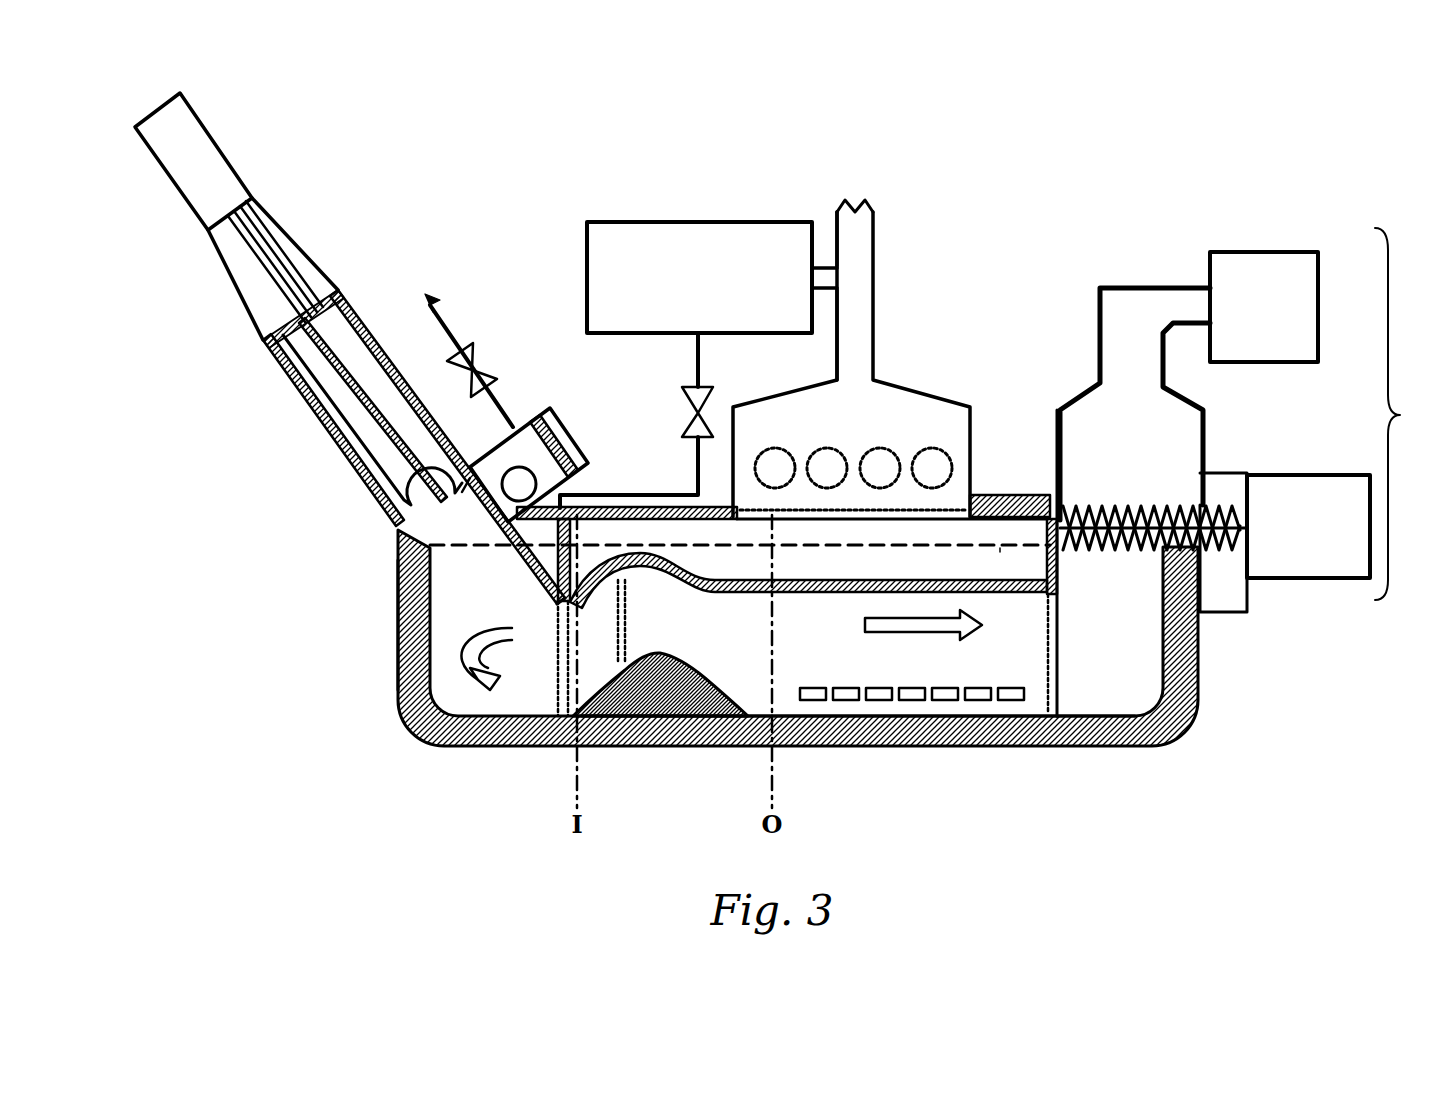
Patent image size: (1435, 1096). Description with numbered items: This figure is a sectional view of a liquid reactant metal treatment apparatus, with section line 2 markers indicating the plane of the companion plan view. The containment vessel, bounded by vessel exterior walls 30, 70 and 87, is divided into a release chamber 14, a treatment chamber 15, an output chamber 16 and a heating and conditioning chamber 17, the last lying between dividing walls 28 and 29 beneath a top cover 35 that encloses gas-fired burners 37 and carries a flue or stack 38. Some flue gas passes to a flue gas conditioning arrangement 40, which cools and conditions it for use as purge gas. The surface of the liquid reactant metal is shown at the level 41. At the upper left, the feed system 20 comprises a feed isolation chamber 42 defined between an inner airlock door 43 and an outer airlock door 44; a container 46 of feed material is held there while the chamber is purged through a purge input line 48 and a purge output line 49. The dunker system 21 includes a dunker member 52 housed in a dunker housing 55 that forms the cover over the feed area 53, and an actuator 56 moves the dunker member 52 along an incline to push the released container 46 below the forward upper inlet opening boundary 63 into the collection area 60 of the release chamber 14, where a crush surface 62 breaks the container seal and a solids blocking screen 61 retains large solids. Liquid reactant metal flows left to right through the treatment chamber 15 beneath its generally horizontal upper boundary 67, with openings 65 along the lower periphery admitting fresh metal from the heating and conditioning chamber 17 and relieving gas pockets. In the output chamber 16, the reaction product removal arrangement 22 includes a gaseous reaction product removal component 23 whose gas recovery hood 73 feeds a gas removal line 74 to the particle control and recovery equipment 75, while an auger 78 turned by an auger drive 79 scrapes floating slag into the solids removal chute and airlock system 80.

The release chamber 14 is at (677, 677).
The treatment chamber 15 is at (914, 677).
The output chamber 16 is at (1096, 679).
The heating and conditioning chamber 17 is at (862, 558).
The feed system 20 is at (566, 410).
The dunker system 21 is at (264, 412).
The reaction product removal arrangement 22 is at (1403, 414).
The gaseous reaction product removal component 23 is at (1076, 332).
The dividing wall 28 is at (558, 668).
The dividing wall 29 is at (1040, 650).
The vessel exterior wall 30 is at (1010, 495).
The top cover 35 is at (936, 400).
The gas-fired burners 37 is at (932, 448).
The flue or stack 38 is at (878, 290).
The flue gas conditioning arrangement 40 is at (705, 222).
The level of liquid reactant metal 41 is at (1000, 548).
The feed isolation chamber 42 is at (522, 405).
The inner airlock door 43 is at (504, 442).
The outer airlock door 44 is at (590, 450).
The container of feed material 46 is at (580, 487).
The purge input line 48 is at (698, 462).
The purge output line 49 is at (500, 398).
The dunker member 52 is at (404, 380).
The feed area 53 is at (740, 562).
The dunker housing 55 is at (372, 327).
The actuator 56 is at (227, 152).
The collection area 60 is at (655, 580).
The solids blocking screen 61 is at (626, 612).
The crush surface 62 is at (600, 738).
The forward upper inlet opening boundary 63 is at (557, 608).
The openings 65 is at (1011, 688).
The upper boundary 67 is at (852, 596).
The vessel exterior wall 70 is at (1195, 722).
The gas recovery hood 73 is at (1072, 398).
The gas removal line 74 is at (1135, 290).
The particle control and recovery equipment 75 is at (1272, 252).
The auger 78 is at (1122, 505).
The auger drive 79 is at (1325, 475).
The solids removal chute and airlock system 80 is at (1237, 614).
The vessel exterior wall 87 is at (398, 602).
The section line 2 is at (1302, 683).